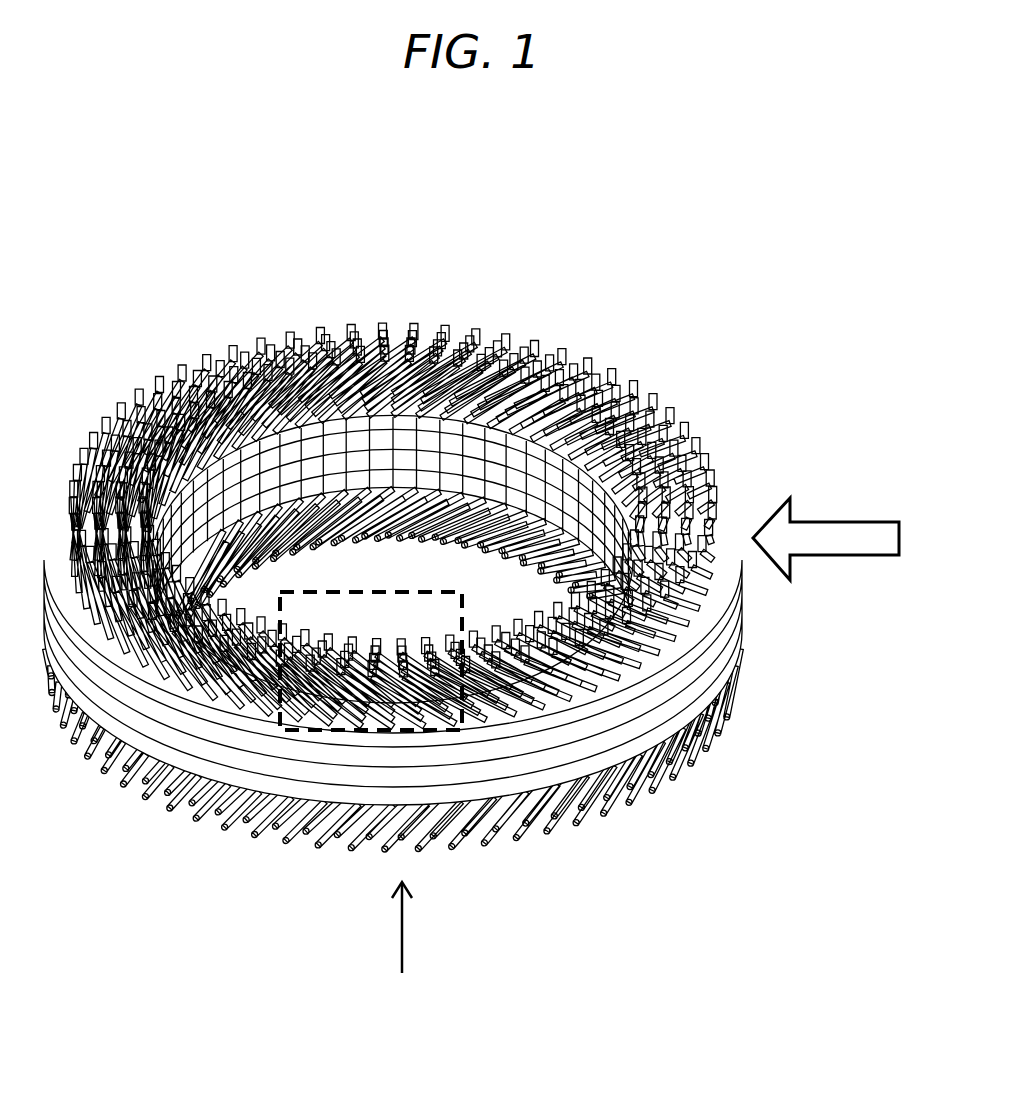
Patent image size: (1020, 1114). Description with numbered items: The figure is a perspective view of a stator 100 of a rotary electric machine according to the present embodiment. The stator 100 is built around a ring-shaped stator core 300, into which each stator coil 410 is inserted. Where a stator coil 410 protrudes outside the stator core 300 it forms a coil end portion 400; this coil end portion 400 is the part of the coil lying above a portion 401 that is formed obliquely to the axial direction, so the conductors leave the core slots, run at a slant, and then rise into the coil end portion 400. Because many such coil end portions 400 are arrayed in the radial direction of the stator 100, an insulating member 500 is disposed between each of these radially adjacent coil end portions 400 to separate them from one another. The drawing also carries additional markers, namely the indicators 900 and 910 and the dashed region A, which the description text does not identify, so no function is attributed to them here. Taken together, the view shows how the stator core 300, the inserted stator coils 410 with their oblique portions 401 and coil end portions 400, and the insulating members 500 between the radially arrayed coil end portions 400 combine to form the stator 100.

The stator 100 is at (157, 315).
The stator core 300 is at (205, 767).
The coil end portion 400 is at (309, 681).
The portion formed obliquely to the axial direction 401 is at (253, 700).
The stator coil 410 is at (152, 650).
The insulating member 500 is at (376, 685).
The direction arrow 900 is at (830, 540).
The nozzle 910 is at (433, 700).
The region A is at (432, 730).